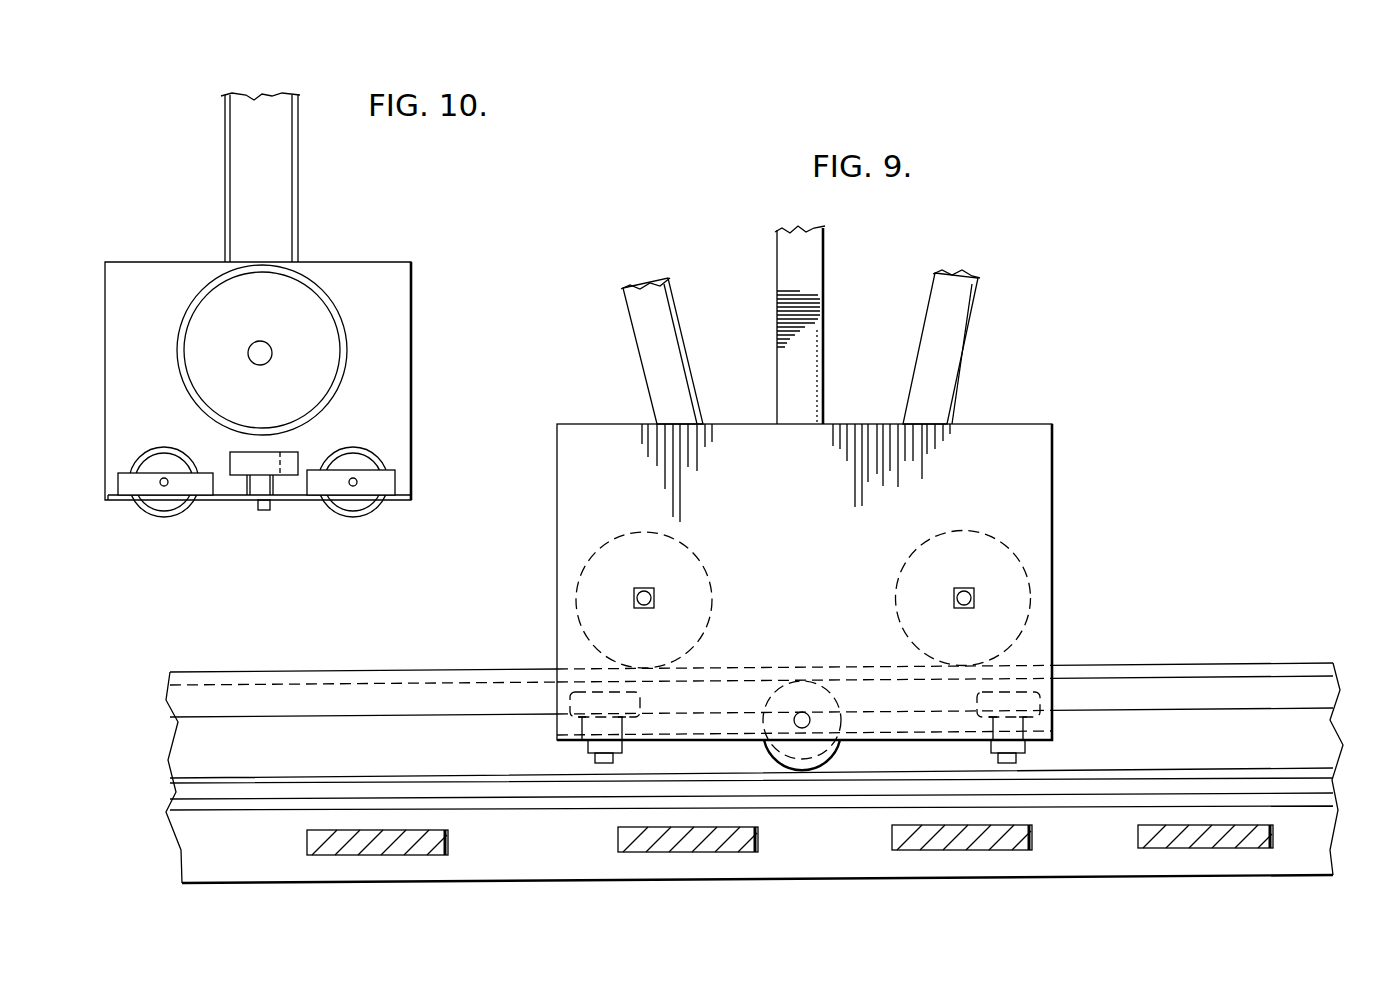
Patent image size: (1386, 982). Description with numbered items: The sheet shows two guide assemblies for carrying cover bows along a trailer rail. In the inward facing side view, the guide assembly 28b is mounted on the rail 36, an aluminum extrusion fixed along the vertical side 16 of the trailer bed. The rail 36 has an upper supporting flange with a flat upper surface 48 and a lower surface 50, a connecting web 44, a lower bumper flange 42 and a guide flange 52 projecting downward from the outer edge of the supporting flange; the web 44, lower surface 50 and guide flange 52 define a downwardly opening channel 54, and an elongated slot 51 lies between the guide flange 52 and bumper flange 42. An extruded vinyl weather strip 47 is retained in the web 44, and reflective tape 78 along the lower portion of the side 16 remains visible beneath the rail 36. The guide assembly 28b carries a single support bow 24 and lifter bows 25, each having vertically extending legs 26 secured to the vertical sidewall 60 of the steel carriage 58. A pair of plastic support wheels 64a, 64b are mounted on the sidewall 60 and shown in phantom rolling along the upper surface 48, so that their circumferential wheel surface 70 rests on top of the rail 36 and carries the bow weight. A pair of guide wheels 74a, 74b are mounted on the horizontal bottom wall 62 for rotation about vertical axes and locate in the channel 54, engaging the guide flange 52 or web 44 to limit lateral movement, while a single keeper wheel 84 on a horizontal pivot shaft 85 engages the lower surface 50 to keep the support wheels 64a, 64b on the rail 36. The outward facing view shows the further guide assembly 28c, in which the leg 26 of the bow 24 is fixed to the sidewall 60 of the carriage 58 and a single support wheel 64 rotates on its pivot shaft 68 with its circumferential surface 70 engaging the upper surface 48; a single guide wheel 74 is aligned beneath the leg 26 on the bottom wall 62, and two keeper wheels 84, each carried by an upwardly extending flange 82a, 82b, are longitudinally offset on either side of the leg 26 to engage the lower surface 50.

In FIG. 9, the vertical side 16 is at (749, 777).
In FIG. 10, the support bow 24 is at (309, 169).
In FIG. 9, the support bow 24 is at (796, 265).
In FIG. 9, the lifter bow 25 is at (653, 302).
In FIG. 10, the leg 26 is at (237, 183).
In FIG. 9, the leg 26 is at (817, 246).
In FIG. 9, the guide assembly 28b is at (1027, 516).
In FIG. 10, the guide assembly 28c is at (281, 330).
In FIG. 9, the rail 36 is at (1237, 658).
In FIG. 9, the lower bumper flange 42 is at (226, 806).
In FIG. 9, the connecting web 44 is at (751, 763).
In FIG. 9, the weather strip 47 is at (270, 779).
In FIG. 9, the upper surface 48 is at (313, 671).
In FIG. 9, the lower surface 50 is at (197, 688).
In FIG. 9, the elongated slot 51 is at (1341, 720).
In FIG. 9, the guide flange 52 is at (751, 697).
In FIG. 9, the channel 54 is at (428, 720).
In FIG. 10, the carriage 58 is at (296, 381).
In FIG. 9, the sidewall 60 is at (578, 478).
In FIG. 10, the bottom wall 62 is at (232, 505).
In FIG. 10, the support wheel 64 is at (313, 310).
In FIG. 9, the support wheel 64a is at (630, 547).
In FIG. 9, the support wheel 64b is at (963, 532).
In FIG. 10, the pivot shaft 68 is at (258, 347).
In FIG. 10, the circumferential wheel surface 70 is at (185, 312).
In FIG. 9, the circumferential wheel surface 70 is at (702, 562).
In FIG. 10, the guide wheel 74 is at (297, 462).
In FIG. 9, the guide wheel 74a is at (645, 703).
In FIG. 9, the guide wheel 74b is at (1060, 702).
In FIG. 9, the reflective tape 78 is at (372, 845).
In FIG. 10, the flange 82a is at (393, 480).
In FIG. 10, the flange 82b is at (128, 480).
In FIG. 10, the keeper wheel 84 is at (172, 516).
In FIG. 9, the keeper wheel 84 is at (825, 750).
In FIG. 9, the pivot shaft 85 is at (808, 712).